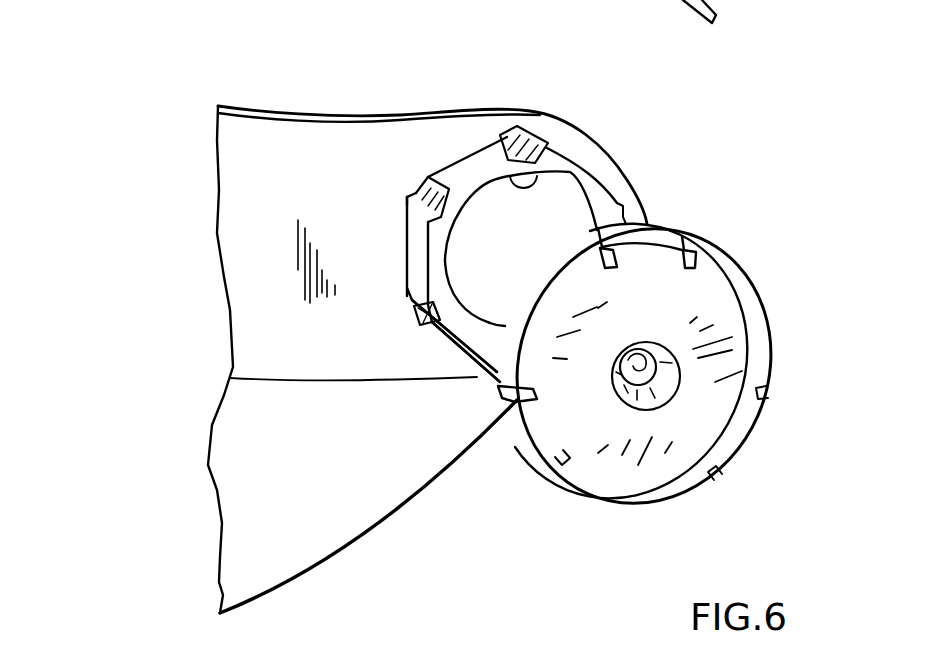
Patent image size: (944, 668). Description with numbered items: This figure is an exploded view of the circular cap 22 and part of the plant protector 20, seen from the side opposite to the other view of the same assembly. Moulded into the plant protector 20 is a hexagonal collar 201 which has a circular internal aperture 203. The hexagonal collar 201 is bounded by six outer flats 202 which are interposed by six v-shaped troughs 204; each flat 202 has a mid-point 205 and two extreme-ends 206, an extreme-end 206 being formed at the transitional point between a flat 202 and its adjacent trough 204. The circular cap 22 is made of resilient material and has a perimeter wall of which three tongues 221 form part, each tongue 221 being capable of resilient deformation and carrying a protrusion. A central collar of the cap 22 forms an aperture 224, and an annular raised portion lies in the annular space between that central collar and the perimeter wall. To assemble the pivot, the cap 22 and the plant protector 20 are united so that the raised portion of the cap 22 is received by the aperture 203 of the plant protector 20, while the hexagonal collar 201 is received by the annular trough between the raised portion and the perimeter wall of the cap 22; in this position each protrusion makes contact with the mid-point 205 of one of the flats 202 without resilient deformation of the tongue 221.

The plant protector 20 is at (297, 190).
The circular cap 22 is at (760, 303).
The hexagonal collar 201 is at (474, 355).
The outer flats 202 is at (475, 163).
The circular internal aperture 203 is at (507, 187).
The v-shaped troughs 204 is at (423, 193).
The mid-point 205 is at (407, 257).
The extreme-ends 206 is at (405, 296).
The tongues 221 is at (650, 230).
The aperture 224 is at (650, 370).